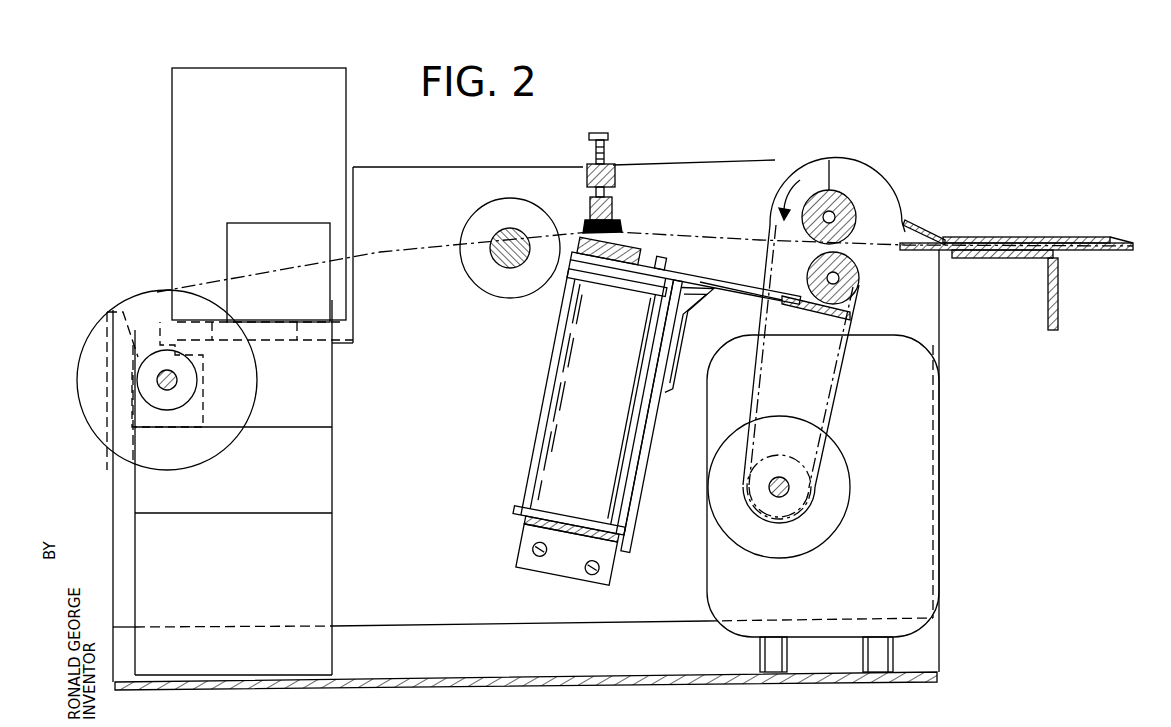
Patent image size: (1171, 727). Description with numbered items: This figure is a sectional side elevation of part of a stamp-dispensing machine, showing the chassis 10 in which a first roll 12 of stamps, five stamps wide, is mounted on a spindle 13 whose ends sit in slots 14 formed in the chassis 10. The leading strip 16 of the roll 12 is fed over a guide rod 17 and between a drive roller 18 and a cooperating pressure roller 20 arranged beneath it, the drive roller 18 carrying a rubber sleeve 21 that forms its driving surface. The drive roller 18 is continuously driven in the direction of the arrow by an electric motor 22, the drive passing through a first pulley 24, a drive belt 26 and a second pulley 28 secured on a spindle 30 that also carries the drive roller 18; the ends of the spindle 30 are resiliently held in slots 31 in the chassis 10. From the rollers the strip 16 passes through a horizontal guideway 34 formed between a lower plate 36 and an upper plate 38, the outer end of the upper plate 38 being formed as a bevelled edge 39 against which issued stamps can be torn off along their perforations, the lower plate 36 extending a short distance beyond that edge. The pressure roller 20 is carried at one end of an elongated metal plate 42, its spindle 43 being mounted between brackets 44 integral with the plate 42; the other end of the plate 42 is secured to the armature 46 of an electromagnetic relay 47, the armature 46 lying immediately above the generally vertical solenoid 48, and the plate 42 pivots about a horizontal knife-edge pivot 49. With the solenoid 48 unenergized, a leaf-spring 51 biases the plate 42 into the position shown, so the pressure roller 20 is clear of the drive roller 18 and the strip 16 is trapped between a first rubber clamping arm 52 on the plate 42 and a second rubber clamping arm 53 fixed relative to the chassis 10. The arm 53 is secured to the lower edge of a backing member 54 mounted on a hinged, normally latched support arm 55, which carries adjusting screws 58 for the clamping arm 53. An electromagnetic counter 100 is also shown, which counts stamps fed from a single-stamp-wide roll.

The chassis 10 is at (417, 684).
The first roll 12 is at (95, 355).
The spindle 13 is at (177, 380).
The slots 14 is at (157, 383).
The leading strip 16 is at (440, 240).
The guide rod 17 is at (515, 235).
The drive roller 18 is at (864, 215).
The pressure roller 20 is at (852, 286).
The rubber sleeve 21 is at (832, 160).
The electric motor 22 is at (915, 385).
The first pulley 24 is at (800, 500).
The drive belt 26 is at (840, 408).
The second pulley 28 is at (868, 196).
The spindle 30 is at (840, 210).
The slots 31 is at (815, 170).
The horizontal guideway 34 is at (1073, 252).
The lower plate 36 is at (1125, 250).
The upper plate 38 is at (1055, 218).
The bevelled edge 39 is at (1110, 235).
The elongated metal plate 42 is at (738, 245).
The spindle 43 is at (840, 280).
The brackets 44 is at (776, 291).
The armature 46 is at (576, 262).
The electromagnetic relay 47 is at (548, 385).
The solenoid 48 is at (576, 360).
The knife-edge pivot 49 is at (700, 290).
The leaf-spring 51 is at (660, 448).
The first rubber clamping arm 52 is at (640, 240).
The second rubber clamping arm 53 is at (621, 230).
The backing member 54 is at (612, 207).
The support arm 55 is at (614, 170).
The adjusting screws 58 is at (608, 134).
The electromagnetic counter 100 is at (346, 122).